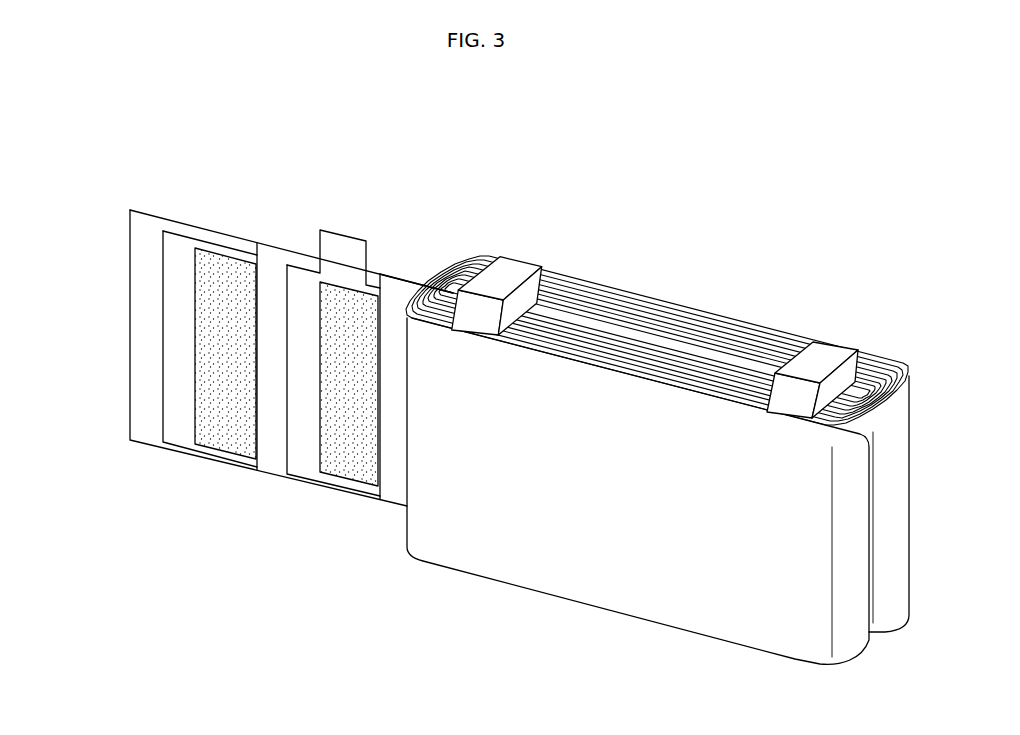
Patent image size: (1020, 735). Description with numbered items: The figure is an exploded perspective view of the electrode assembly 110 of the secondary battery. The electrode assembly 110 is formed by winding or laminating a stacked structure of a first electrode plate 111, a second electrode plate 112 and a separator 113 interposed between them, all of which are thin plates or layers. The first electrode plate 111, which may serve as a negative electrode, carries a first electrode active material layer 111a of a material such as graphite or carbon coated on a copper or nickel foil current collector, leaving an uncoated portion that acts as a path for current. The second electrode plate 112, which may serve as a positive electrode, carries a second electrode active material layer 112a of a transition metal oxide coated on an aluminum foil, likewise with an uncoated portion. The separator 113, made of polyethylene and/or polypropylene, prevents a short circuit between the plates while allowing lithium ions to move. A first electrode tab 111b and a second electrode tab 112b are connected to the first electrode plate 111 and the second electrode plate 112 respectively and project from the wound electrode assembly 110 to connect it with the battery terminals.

The electrode assembly 110 is at (612, 605).
The first electrode plate 111 is at (300, 262).
The first electrode active material layer 111a is at (327, 372).
The first electrode tab 111b is at (517, 265).
The second electrode plate 112 is at (207, 242).
The second electrode active material layer 112a is at (208, 283).
The second electrode tab 112b is at (835, 350).
The separator 113 is at (147, 420).